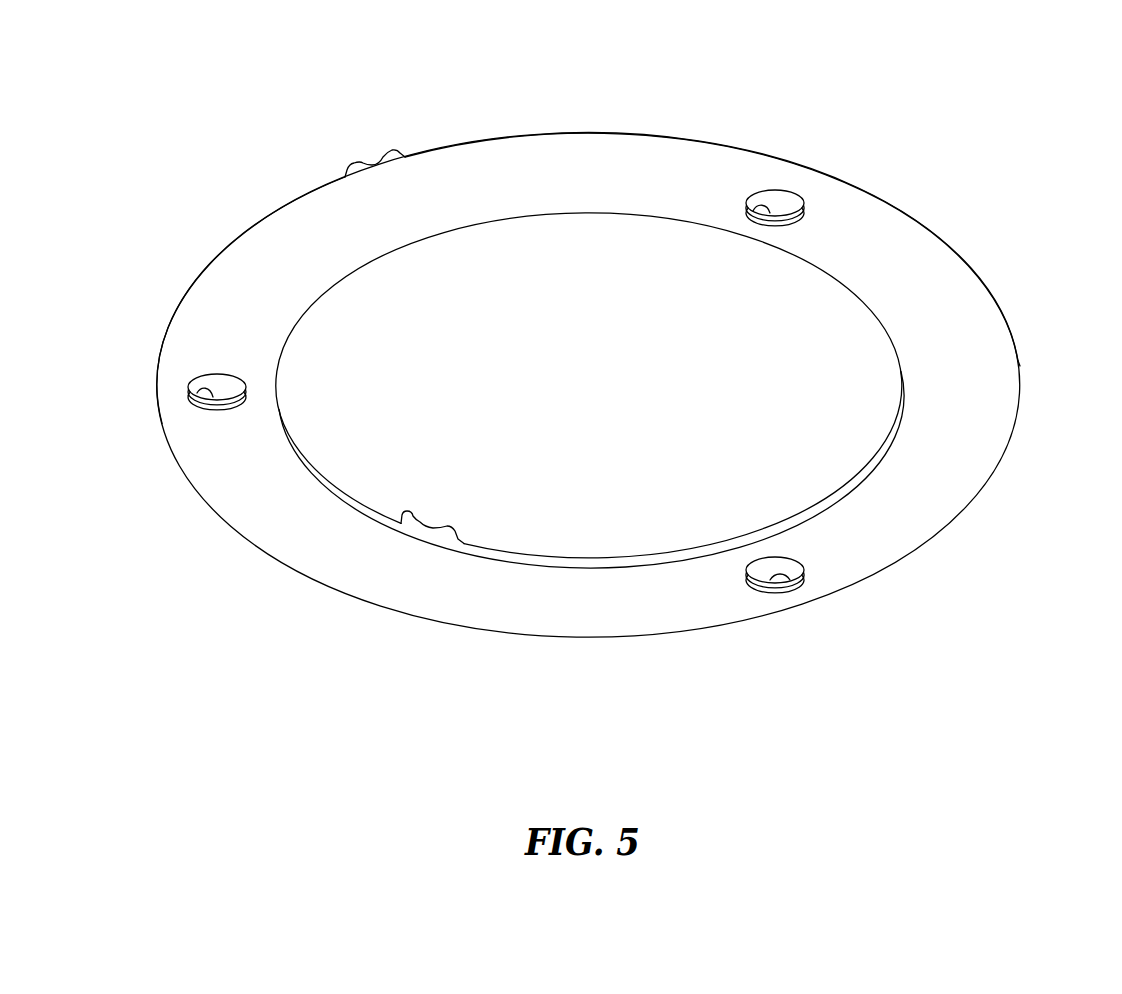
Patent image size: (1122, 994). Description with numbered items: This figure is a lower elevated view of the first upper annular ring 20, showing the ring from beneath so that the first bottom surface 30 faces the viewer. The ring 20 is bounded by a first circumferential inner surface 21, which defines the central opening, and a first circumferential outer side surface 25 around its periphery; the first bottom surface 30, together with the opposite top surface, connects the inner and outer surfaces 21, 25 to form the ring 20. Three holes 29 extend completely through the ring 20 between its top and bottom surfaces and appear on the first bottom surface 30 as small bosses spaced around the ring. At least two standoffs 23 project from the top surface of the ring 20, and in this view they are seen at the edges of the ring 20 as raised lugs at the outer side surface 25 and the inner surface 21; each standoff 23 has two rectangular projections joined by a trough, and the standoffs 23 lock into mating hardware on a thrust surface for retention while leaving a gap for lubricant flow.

The first upper annular ring 20 is at (889, 145).
The first circumferential inner surface 21 is at (677, 550).
The standoff 23 is at (382, 152).
The first circumferential outer side surface 25 is at (527, 138).
The hole 29 is at (748, 212).
The first bottom surface 30 is at (903, 267).